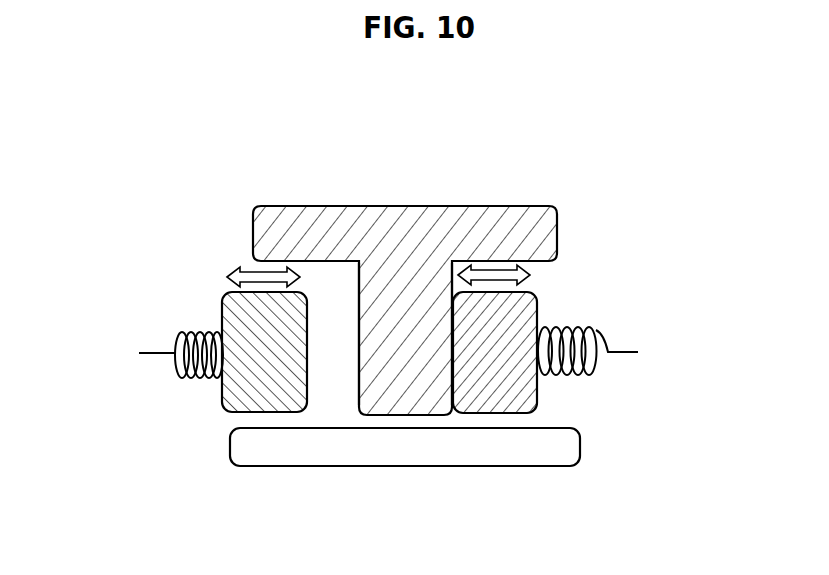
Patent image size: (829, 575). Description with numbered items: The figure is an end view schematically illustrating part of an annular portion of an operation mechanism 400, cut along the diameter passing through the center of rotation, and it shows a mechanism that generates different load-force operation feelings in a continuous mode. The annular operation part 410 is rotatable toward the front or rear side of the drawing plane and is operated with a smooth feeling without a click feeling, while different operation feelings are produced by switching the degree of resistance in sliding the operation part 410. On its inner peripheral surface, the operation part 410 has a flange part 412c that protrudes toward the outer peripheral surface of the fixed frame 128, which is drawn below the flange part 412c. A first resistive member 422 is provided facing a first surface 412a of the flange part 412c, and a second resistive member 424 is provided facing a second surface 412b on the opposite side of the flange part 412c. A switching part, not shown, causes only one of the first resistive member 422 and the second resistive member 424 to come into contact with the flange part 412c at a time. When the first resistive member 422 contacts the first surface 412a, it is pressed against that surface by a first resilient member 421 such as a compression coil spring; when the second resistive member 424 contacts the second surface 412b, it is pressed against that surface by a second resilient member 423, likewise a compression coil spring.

The operation mechanism 400 is at (602, 182).
The operation part 410 is at (557, 230).
The first surface 412a is at (455, 262).
The second surface 412b is at (358, 293).
The flange part 412c is at (407, 395).
The first resilient member 421 is at (608, 332).
The first resistive member 422 is at (536, 295).
The second resilient member 423 is at (155, 355).
The second resistive member 424 is at (222, 295).
The fixed frame 128 is at (580, 443).